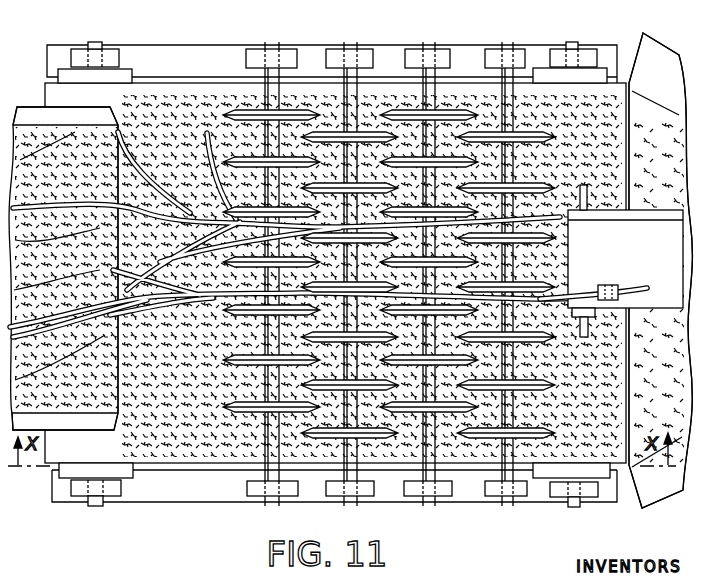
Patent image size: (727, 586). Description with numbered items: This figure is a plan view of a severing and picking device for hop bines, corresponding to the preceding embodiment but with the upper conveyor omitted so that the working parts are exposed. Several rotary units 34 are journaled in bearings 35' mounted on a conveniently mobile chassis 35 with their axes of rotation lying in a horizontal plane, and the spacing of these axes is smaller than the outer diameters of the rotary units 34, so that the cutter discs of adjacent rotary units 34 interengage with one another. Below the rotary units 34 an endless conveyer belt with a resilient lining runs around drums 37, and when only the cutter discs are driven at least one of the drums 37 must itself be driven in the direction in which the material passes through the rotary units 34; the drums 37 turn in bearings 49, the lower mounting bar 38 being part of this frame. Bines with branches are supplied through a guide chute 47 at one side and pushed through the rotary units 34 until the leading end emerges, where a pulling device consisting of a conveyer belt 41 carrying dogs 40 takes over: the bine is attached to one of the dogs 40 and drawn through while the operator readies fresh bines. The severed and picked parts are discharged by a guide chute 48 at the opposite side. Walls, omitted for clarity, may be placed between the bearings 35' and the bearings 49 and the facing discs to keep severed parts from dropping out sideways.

The rotary unit 34 is at (290, 115).
The mobile chassis 35 is at (332, 271).
The bearing 35' is at (385, 272).
The drum 37 is at (127, 75).
The lower mounting bar 38 is at (158, 452).
The dog 40 is at (608, 287).
The conveyer belt 41 is at (618, 302).
The guide chute 47 is at (40, 128).
The guide chute 48 is at (637, 68).
The bearing 49 is at (110, 57).